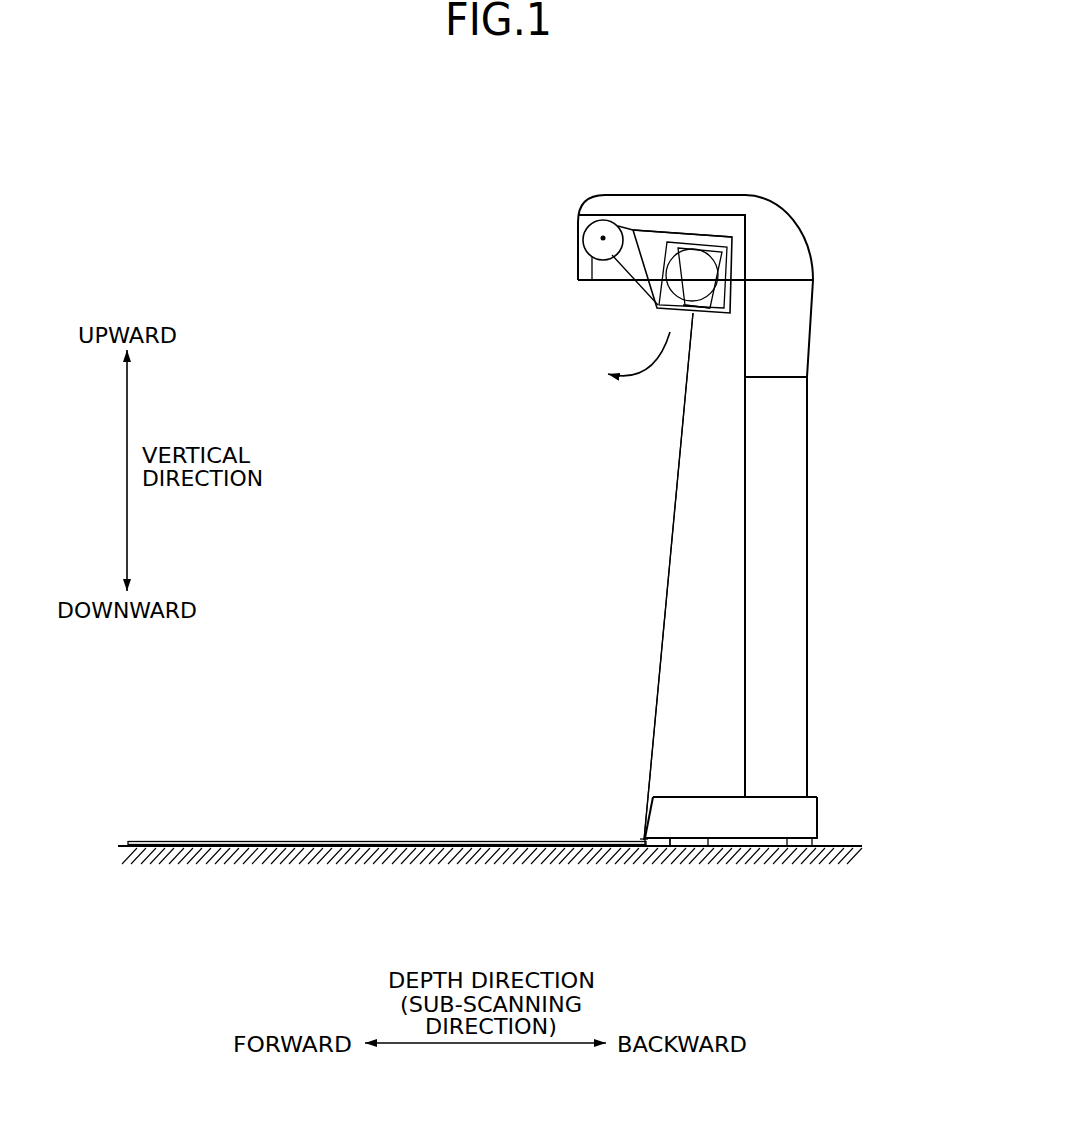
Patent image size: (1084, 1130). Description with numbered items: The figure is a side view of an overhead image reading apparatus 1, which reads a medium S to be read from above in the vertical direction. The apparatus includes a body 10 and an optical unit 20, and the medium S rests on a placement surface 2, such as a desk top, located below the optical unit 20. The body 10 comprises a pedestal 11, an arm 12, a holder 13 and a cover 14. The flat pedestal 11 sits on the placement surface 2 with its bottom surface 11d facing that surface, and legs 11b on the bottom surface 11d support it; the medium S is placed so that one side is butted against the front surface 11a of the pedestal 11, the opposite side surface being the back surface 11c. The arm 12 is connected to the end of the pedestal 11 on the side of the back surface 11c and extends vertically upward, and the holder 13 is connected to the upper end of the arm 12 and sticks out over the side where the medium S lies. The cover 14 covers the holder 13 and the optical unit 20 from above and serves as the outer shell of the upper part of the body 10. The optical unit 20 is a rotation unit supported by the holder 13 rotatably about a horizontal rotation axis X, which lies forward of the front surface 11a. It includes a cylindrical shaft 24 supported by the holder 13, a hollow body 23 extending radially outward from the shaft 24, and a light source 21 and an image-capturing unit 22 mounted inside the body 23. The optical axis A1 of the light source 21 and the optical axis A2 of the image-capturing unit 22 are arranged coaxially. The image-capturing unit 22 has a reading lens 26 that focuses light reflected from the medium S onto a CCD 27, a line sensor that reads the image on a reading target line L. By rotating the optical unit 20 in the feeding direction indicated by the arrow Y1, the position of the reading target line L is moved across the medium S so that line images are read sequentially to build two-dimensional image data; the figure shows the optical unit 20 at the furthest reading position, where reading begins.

The overhead image reading apparatus 1 is at (605, 147).
The placement surface 2 is at (842, 846).
The body 10 is at (755, 561).
The pedestal 11 is at (732, 652).
The front surface 11a is at (653, 798).
The legs 11b is at (660, 853).
The back surface 11c is at (820, 802).
The bottom surface 11d is at (708, 852).
The arm 12 is at (807, 403).
The holder 13 is at (733, 216).
The cover 14 is at (810, 240).
The optical unit 20 is at (624, 262).
The light source 21 is at (716, 300).
The image-capturing unit 22 is at (674, 299).
The body 23 is at (672, 226).
The shaft 24 is at (600, 212).
The reading lens 26 is at (665, 276).
The CCD 27 is at (692, 226).
The rotation axis X is at (600, 238).
The feeding direction Y1 is at (640, 363).
The optical axis of the light source A1 is at (672, 540).
The optical axis of the image-capturing unit A2 is at (668, 576).
The reading target line L is at (641, 839).
The medium to be read S is at (210, 841).